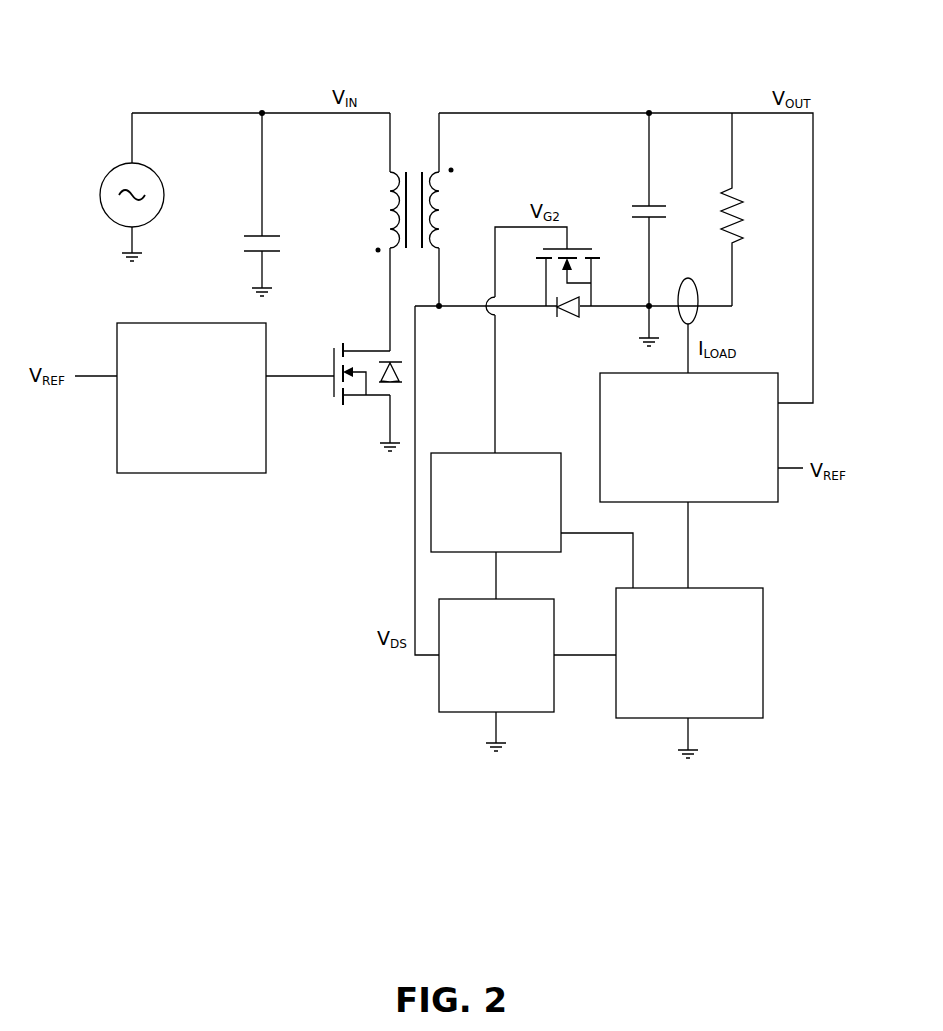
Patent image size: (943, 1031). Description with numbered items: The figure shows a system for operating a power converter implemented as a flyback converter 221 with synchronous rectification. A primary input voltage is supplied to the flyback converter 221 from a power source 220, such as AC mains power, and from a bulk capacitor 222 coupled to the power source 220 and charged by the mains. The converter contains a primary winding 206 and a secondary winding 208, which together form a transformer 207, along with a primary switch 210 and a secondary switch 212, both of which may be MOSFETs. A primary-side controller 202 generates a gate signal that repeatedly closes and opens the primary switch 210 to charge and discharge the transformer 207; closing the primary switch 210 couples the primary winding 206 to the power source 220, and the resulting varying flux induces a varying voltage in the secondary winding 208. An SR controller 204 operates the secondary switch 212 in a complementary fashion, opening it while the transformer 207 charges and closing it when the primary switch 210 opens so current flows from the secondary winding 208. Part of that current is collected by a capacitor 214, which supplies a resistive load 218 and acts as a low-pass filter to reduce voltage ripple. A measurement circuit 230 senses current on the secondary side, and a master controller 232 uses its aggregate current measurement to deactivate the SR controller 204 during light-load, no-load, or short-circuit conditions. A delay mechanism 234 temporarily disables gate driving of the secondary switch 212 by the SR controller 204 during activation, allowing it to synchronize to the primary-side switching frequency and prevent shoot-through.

The flyback converter 221 is at (500, 56).
The power source 220 is at (154, 187).
The bulk capacitor 222 is at (282, 204).
The transformer 207 is at (376, 163).
The primary winding 206 is at (375, 232).
The secondary winding 208 is at (456, 209).
The primary switch 210 is at (334, 389).
The primary-side controller 202 is at (191, 398).
The secondary switch 212 is at (586, 283).
The capacitor 214 is at (670, 229).
The resistive load 218 is at (753, 209).
The measurement circuit 230 is at (701, 480).
The delay mechanism 234 is at (532, 526).
The SR controller 204 is at (527, 675).
The master controller 232 is at (689, 673).